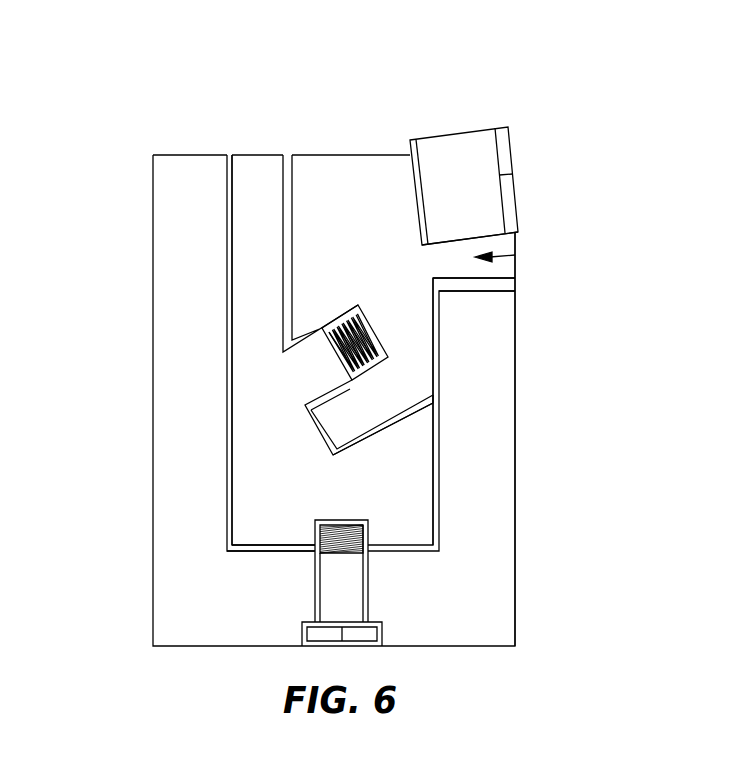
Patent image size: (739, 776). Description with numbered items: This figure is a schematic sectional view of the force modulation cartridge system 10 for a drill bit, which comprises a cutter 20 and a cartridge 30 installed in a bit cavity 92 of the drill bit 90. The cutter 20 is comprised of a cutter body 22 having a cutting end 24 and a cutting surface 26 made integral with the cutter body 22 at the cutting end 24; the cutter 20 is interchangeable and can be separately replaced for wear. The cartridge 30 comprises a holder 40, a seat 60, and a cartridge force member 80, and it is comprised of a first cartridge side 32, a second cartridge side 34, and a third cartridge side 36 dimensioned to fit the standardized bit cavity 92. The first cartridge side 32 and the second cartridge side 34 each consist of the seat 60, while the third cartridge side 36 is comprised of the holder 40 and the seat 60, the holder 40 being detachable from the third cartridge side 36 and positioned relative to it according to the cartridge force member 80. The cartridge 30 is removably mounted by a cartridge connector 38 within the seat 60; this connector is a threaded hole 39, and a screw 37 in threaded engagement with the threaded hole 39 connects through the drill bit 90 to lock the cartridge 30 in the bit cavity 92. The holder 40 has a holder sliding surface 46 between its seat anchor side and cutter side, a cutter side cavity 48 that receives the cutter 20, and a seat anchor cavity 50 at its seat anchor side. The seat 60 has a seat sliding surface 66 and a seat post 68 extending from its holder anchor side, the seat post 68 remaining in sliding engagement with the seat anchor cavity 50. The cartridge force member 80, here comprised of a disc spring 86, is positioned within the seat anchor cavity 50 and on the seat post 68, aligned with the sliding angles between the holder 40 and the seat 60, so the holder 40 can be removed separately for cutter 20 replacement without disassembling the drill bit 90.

The force modulation cartridge system 10 is at (515, 255).
The cutter 20 is at (460, 157).
The cutter body 22 is at (490, 207).
The cutting end 24 is at (517, 172).
The cutting surface 26 is at (517, 142).
The cartridge 30 is at (435, 407).
The first cartridge side 32 is at (232, 300).
The second cartridge side 34 is at (262, 548).
The third cartridge side 36 is at (438, 450).
The screw 37 is at (352, 607).
The cartridge connector 38 is at (320, 537).
The threaded hole 39 is at (367, 535).
The holder 40 is at (362, 180).
The holder sliding surface 46 is at (433, 430).
The cutter side cavity 48 is at (407, 180).
The seat anchor cavity 50 is at (337, 318).
The seat 60 is at (255, 178).
The seat sliding surface 66 is at (433, 430).
The seat post 68 is at (320, 363).
The cartridge force member 80 is at (358, 305).
The disc spring 86 is at (383, 342).
The drill bit 90 is at (168, 212).
The bit cavity 92 is at (226, 188).